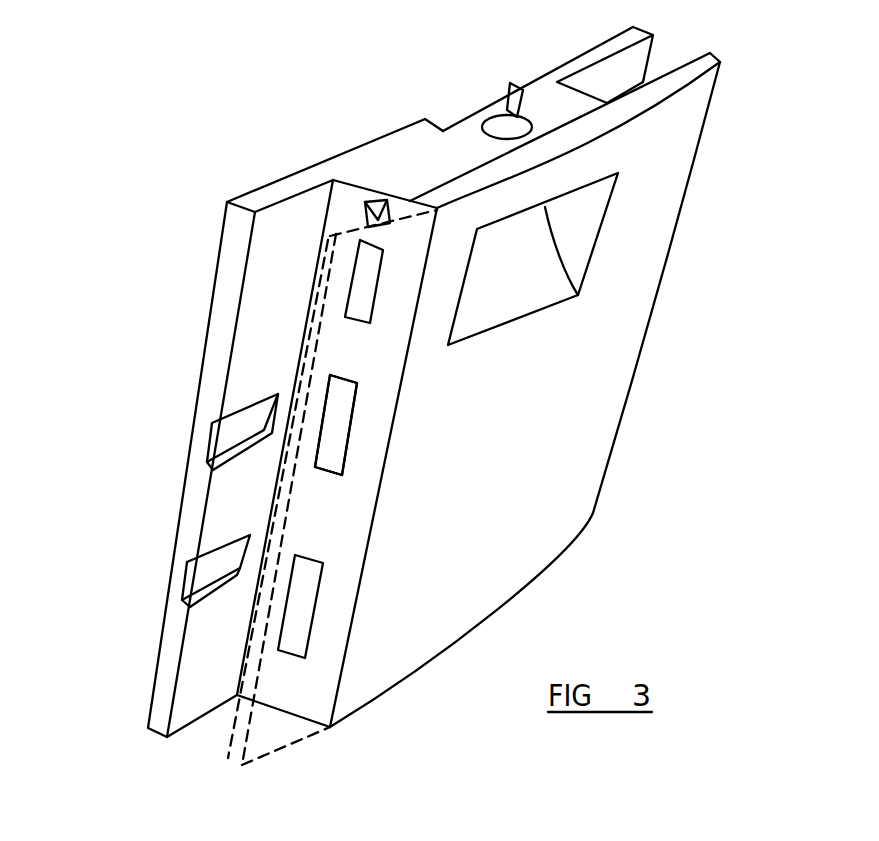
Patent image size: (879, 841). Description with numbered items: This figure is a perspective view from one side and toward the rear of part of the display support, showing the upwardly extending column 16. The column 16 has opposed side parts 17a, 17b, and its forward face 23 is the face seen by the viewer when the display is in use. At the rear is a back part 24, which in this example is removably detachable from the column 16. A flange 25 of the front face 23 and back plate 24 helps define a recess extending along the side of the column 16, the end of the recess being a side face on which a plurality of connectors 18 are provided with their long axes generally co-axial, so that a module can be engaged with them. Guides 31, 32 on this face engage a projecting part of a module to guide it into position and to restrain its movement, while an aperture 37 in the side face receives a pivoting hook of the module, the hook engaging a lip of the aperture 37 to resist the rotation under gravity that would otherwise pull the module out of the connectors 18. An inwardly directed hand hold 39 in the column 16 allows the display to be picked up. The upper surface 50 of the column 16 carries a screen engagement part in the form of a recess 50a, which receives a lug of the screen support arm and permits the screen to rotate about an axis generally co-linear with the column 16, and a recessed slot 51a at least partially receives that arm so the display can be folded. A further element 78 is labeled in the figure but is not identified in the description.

The column 16 is at (416, 382).
The side part 17a is at (292, 234).
The side part 17b is at (666, 58).
The connectors 18 is at (350, 293).
The forward face 23 is at (348, 150).
The back part 24 is at (633, 268).
The flange 25 is at (270, 182).
The guide 31 is at (222, 440).
The guide 32 is at (200, 580).
The aperture 37 is at (369, 198).
The hand hold 39 is at (537, 273).
The upper surface 50 is at (505, 108).
The recess 50a is at (517, 112).
The recessed slot 51a is at (445, 120).
The aperture 78 is at (338, 400).